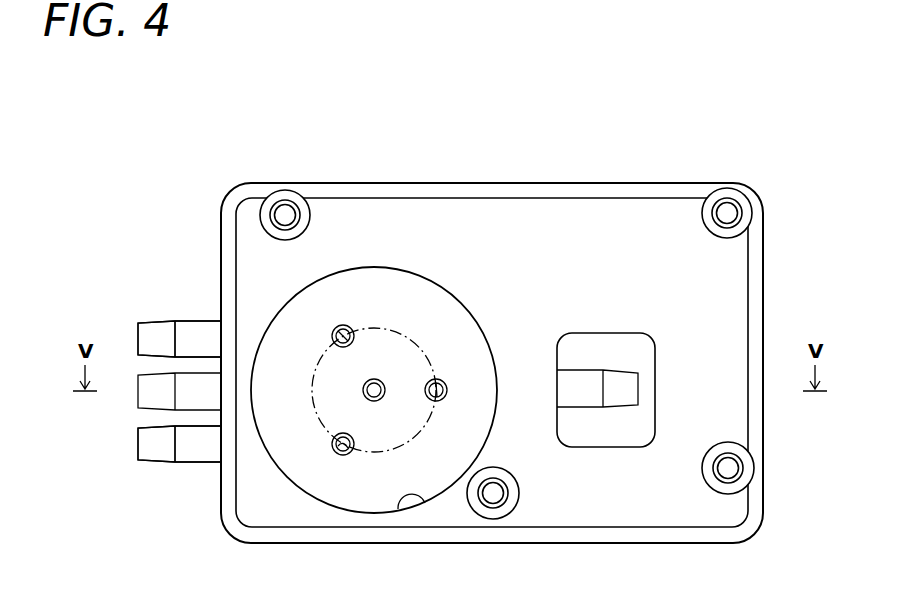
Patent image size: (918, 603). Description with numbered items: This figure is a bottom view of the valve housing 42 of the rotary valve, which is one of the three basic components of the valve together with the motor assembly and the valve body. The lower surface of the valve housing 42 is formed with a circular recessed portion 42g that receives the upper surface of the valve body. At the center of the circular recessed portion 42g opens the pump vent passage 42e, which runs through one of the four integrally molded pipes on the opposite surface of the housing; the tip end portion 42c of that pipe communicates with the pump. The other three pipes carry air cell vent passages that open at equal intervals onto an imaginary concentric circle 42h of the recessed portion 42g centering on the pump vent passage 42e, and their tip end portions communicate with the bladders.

The valve housing 42 is at (515, 182).
The tip end portion 42c is at (155, 409).
The pump vent passage 42e is at (375, 378).
The circular recessed portion 42g is at (424, 505).
The imaginary concentric circle 42h is at (420, 342).